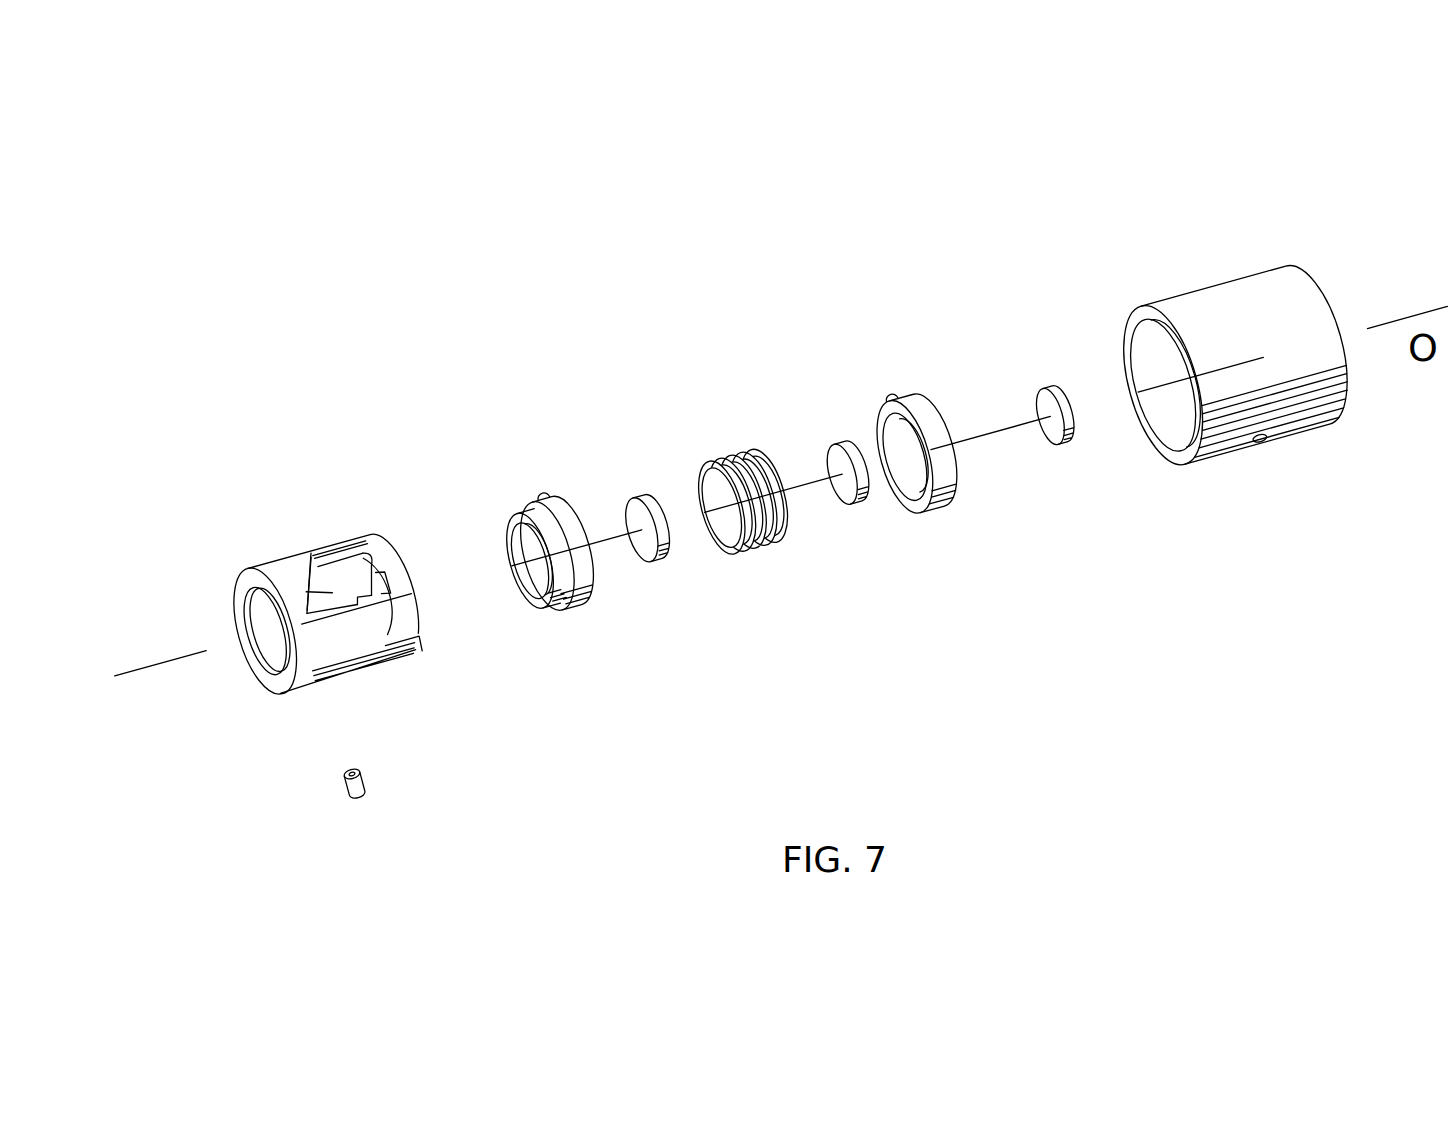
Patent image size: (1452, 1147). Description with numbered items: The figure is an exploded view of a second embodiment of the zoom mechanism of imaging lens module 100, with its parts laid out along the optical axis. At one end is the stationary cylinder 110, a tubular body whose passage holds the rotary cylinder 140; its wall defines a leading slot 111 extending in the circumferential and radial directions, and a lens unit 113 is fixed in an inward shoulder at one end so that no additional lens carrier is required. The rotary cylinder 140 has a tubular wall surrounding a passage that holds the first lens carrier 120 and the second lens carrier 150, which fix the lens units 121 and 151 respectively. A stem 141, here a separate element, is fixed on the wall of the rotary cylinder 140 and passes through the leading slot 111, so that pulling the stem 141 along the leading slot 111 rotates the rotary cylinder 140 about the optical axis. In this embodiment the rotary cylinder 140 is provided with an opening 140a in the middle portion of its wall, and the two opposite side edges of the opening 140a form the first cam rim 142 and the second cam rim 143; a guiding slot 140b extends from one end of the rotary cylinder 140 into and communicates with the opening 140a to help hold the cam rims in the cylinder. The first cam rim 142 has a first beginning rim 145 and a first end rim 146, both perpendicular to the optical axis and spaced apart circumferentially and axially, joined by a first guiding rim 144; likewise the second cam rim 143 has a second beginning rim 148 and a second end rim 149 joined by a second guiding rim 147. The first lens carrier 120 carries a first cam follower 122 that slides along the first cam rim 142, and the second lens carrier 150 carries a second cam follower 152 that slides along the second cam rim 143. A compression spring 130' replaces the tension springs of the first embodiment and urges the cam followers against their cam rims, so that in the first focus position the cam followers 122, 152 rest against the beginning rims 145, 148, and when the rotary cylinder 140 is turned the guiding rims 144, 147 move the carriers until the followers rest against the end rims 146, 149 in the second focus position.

The zoom mechanism of imaging lens module 100 is at (388, 248).
The stationary cylinder 110 is at (1296, 412).
The leading slot 111 is at (1259, 446).
The lens unit 113 is at (1036, 411).
The first lens carrier 120 is at (940, 502).
The lens unit 121 is at (836, 466).
The first cam follower 122 is at (890, 390).
The compression spring 130' is at (779, 552).
The rotary cylinder 140 is at (353, 678).
The opening 140a is at (320, 592).
The guiding slot 140b is at (401, 666).
The stem 141 is at (364, 801).
The first cam rim 142 is at (453, 387).
The second cam rim 143 is at (199, 404).
The first guiding rim 144 is at (355, 556).
The first beginning rim 145 is at (343, 548).
The first end rim 146 is at (375, 540).
The second guiding rim 147 is at (294, 588).
The second beginning rim 148 is at (312, 558).
The second end rim 149 is at (283, 602).
The second lens carrier 150 is at (578, 592).
The lens unit 151 is at (622, 507).
The second cam follower 152 is at (546, 484).